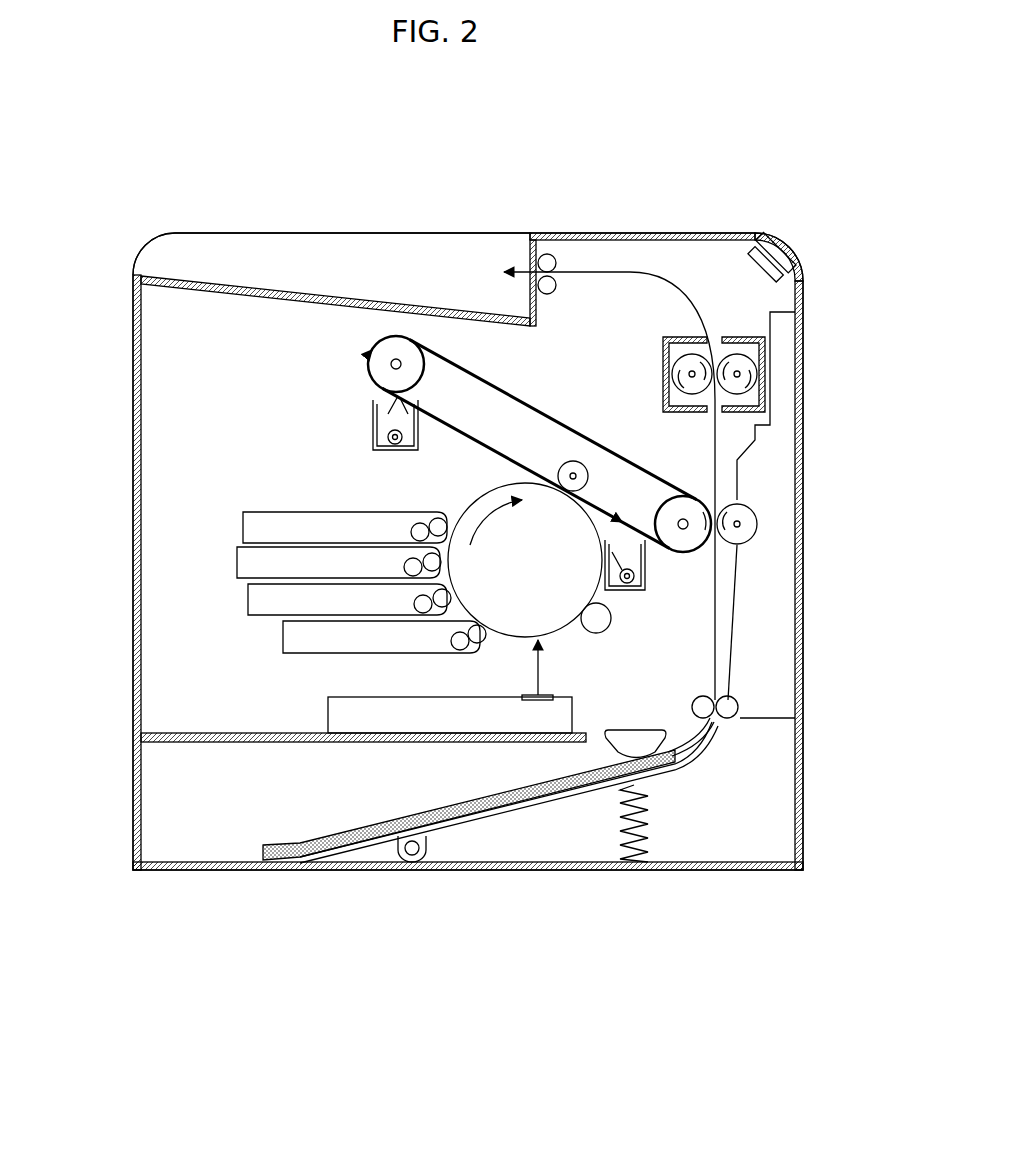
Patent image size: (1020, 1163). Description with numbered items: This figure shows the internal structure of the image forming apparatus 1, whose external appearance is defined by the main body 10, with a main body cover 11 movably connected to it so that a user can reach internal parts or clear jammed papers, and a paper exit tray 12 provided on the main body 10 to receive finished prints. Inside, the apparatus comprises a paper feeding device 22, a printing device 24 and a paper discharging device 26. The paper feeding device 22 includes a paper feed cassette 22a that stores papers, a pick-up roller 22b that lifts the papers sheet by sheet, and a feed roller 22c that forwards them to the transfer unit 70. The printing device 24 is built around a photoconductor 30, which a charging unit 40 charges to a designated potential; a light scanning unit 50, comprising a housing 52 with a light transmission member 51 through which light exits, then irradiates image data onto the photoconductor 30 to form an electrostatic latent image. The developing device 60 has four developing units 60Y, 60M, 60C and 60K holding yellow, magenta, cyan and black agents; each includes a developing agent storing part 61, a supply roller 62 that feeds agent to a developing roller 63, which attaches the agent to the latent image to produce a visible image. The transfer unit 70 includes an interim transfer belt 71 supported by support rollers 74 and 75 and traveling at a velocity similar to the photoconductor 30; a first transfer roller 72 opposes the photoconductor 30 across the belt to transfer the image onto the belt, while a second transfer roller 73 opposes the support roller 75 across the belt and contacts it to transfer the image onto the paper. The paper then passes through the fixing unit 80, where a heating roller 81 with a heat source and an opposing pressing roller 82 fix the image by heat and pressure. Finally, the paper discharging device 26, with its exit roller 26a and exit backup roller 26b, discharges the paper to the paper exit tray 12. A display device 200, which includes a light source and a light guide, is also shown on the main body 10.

The image forming apparatus 1 is at (814, 176).
The main body 10 is at (729, 236).
The main body cover 11 is at (806, 466).
The paper exit tray 12 is at (280, 277).
The paper feeding device 22 is at (570, 830).
The paper feed cassette 22a is at (133, 808).
The pick-up roller 22b is at (634, 736).
The feed roller 22c is at (738, 705).
The printing device 24 is at (170, 430).
The paper discharging device 26 is at (609, 435).
The exit roller 26a is at (548, 295).
The exit backup roller 26b is at (547, 253).
The photoconductor 30 is at (482, 505).
The charging unit 40 is at (612, 620).
The light scanning unit 50 is at (423, 686).
The light transmission member 51 is at (538, 693).
The housing 52 is at (384, 708).
The developing device 60 is at (332, 536).
The developing unit 60Y is at (260, 526).
The developing unit 60M is at (258, 563).
The developing unit 60C is at (262, 600).
The developing unit 60K is at (286, 640).
The developing agent storing part 61 is at (286, 528).
The supply roller 62 is at (414, 524).
The developing roller 63 is at (436, 518).
The transfer unit 70 is at (546, 465).
The interim transfer belt 71 is at (466, 370).
The first transfer roller 72 is at (588, 468).
The second transfer roller 73 is at (760, 546).
The support roller 74 is at (368, 368).
The support roller 75 is at (686, 552).
The fixing unit 80 is at (762, 501).
The heating roller 81 is at (683, 366).
The pressing roller 82 is at (742, 366).
The display device 200 is at (792, 244).